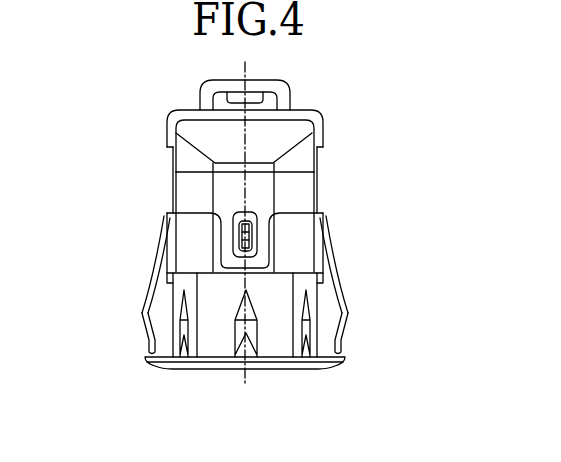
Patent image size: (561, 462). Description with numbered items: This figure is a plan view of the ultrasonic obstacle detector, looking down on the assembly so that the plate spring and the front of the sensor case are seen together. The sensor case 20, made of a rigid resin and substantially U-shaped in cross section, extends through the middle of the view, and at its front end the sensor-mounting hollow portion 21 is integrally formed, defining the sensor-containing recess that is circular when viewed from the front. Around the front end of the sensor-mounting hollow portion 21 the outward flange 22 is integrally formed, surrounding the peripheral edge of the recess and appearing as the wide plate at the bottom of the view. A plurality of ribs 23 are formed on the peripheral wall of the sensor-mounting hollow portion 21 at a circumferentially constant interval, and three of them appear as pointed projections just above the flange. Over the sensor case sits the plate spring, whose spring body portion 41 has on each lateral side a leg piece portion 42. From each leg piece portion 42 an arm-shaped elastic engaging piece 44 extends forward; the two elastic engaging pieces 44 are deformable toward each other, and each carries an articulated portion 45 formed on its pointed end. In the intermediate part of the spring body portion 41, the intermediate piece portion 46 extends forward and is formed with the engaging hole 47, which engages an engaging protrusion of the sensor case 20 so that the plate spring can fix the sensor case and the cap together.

The sensor case 20 is at (288, 142).
The sensor-mounting hollow portion 21 is at (279, 330).
The outward flange 22 is at (337, 365).
The ribs 23 is at (240, 329).
The spring body portion 41 is at (297, 192).
The leg piece portion 42 is at (172, 185).
The elastic engaging pieces 44 is at (153, 278).
The articulated portion 45 is at (139, 327).
The intermediate piece portion 46 is at (220, 232).
The engaging hole 47 is at (253, 236).